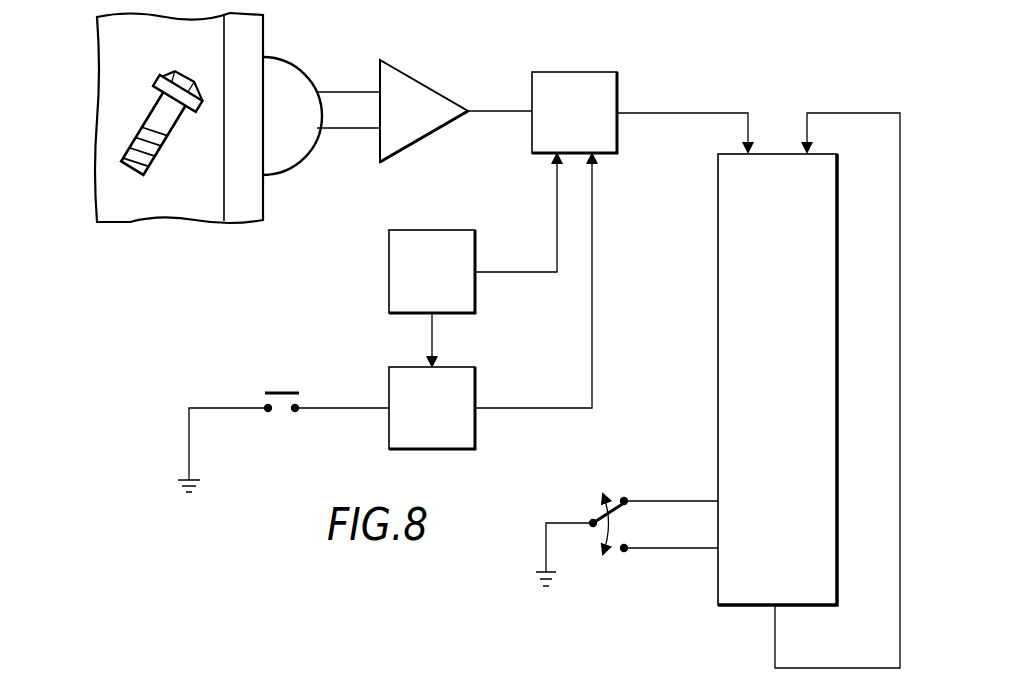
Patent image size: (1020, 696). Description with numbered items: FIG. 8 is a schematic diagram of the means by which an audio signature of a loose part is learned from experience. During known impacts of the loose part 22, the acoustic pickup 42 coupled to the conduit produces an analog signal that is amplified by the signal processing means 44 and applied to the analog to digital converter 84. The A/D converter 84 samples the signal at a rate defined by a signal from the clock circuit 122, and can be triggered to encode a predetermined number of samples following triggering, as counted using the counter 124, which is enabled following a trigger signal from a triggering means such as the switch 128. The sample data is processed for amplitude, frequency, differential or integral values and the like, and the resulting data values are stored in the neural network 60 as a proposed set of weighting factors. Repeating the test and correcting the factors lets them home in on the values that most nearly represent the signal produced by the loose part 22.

The loose part 22 is at (155, 103).
The acoustic pickup 42 is at (300, 72).
The signal processing means 44 is at (432, 82).
The analog to digital converter 84 is at (617, 86).
The clock circuit 122 is at (389, 260).
The counter 124 is at (475, 390).
The switch 128 is at (266, 391).
The neural network 60 is at (718, 272).